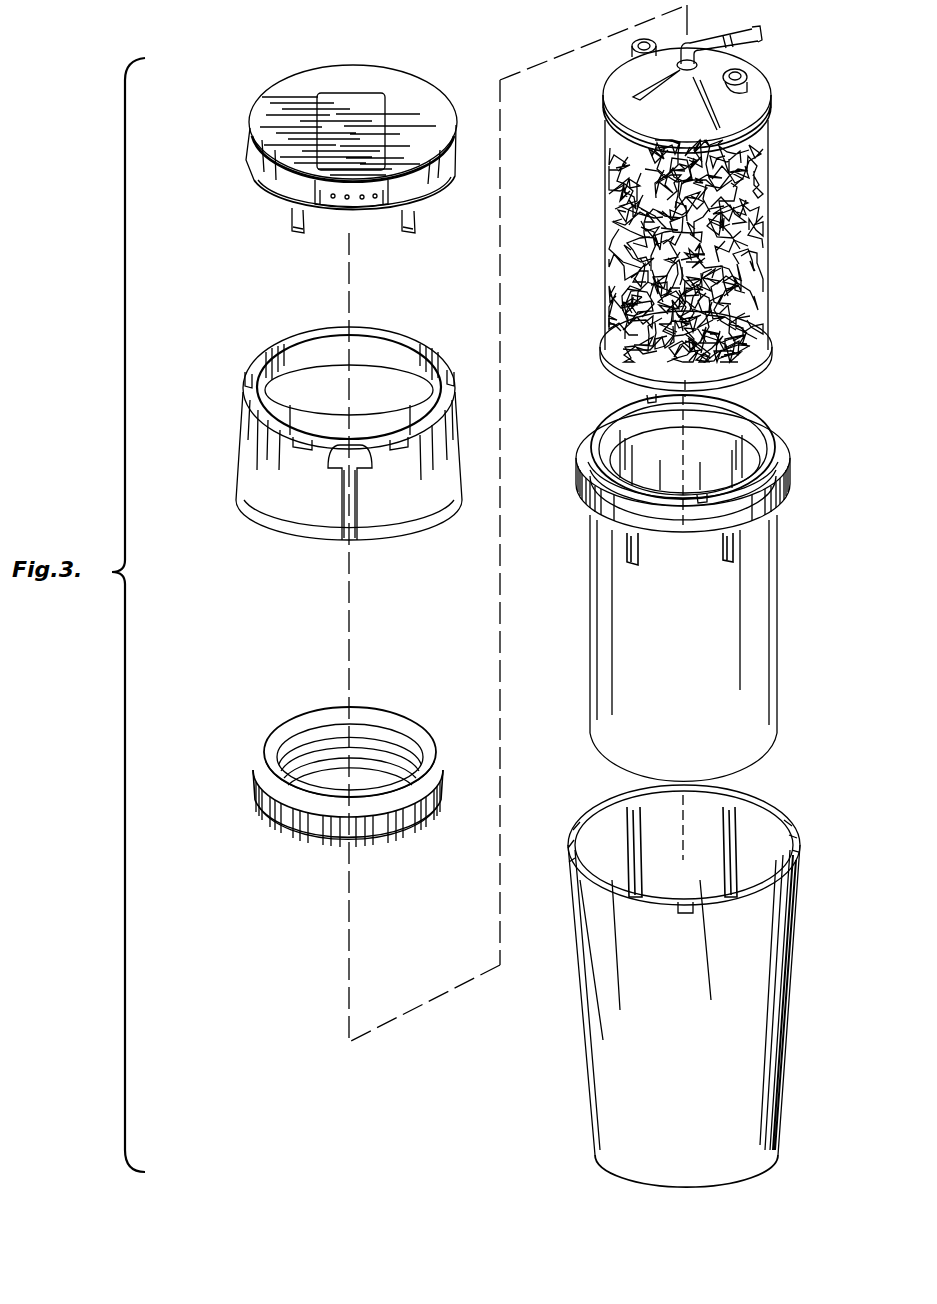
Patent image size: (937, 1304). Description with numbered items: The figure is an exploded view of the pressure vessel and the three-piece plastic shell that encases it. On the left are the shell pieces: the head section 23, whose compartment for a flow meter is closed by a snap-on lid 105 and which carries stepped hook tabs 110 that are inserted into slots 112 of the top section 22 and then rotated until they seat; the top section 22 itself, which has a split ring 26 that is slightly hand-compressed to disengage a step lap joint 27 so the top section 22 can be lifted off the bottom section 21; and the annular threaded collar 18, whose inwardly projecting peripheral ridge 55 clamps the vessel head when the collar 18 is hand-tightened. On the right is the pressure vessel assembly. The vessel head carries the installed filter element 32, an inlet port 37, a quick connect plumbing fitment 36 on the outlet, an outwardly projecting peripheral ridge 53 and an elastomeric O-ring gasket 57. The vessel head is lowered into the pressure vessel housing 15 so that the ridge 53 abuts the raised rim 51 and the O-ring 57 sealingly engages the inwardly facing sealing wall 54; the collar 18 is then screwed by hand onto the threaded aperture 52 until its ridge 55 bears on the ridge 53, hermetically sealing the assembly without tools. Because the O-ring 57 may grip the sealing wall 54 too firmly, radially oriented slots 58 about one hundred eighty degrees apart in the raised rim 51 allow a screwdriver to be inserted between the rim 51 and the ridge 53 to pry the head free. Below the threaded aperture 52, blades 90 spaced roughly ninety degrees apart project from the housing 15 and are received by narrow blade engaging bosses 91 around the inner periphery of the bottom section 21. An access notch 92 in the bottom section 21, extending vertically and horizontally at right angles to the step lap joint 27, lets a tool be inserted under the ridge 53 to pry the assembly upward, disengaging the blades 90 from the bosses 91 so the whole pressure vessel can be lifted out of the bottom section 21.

The pressure vessel housing 15 is at (688, 578).
The annular threaded collar 18 is at (364, 754).
The bottom section 21 is at (674, 974).
The top section 22 is at (319, 454).
The head section 23 is at (335, 156).
The split ring 26 is at (343, 528).
The step lap joint 27 is at (297, 532).
The filter element 32 is at (719, 199).
The quick connect plumbing fitment 36 is at (757, 25).
The inlet port 37 is at (750, 84).
The raised rim 51 is at (752, 411).
The threaded aperture 52 is at (780, 468).
The outwardly projecting peripheral ridge 53 is at (772, 102).
The inwardly facing sealing wall 54 is at (765, 433).
The inwardly projecting peripheral ridge 55 is at (363, 722).
The elastomeric O-ring gasket 57 is at (763, 140).
The radially oriented slots 58 is at (650, 399).
The blades 90 is at (627, 547).
The narrow blade engaging bosses 91 is at (627, 822).
The access notch 92 is at (679, 912).
The lid 105 is at (352, 100).
The stepped hook tabs 110 is at (247, 182).
The slots 112 is at (245, 374).